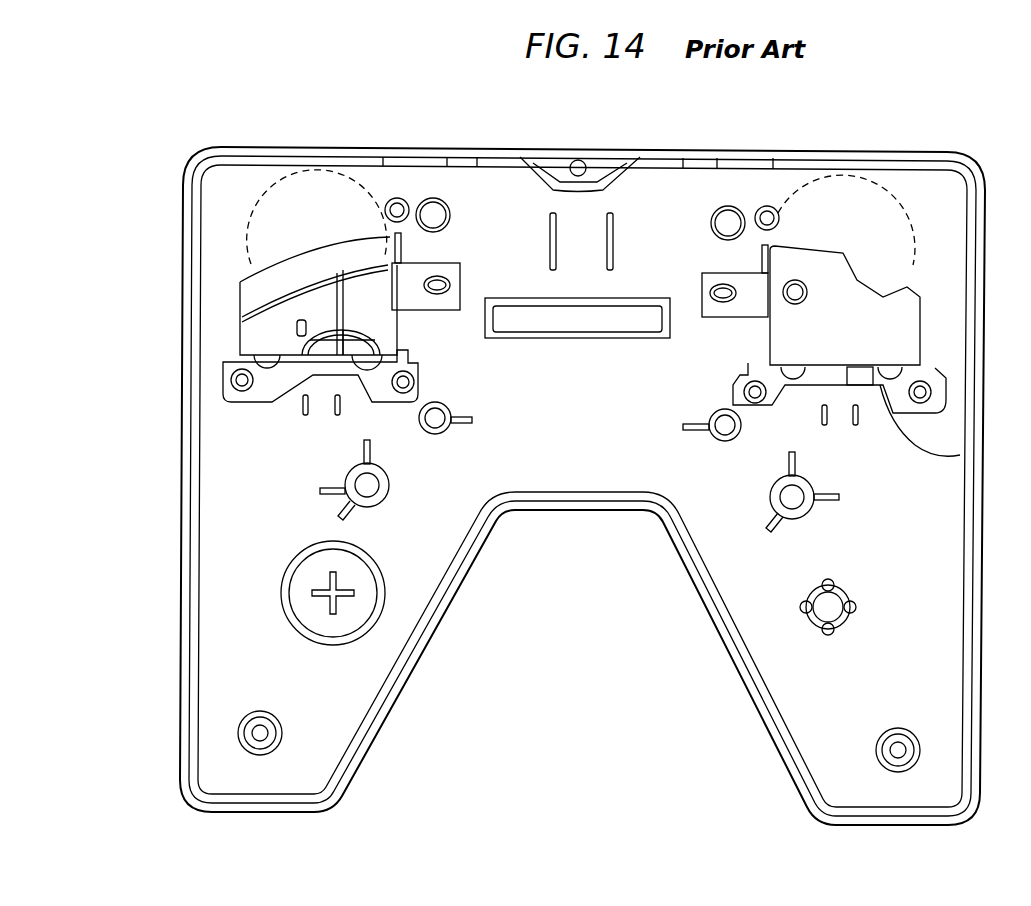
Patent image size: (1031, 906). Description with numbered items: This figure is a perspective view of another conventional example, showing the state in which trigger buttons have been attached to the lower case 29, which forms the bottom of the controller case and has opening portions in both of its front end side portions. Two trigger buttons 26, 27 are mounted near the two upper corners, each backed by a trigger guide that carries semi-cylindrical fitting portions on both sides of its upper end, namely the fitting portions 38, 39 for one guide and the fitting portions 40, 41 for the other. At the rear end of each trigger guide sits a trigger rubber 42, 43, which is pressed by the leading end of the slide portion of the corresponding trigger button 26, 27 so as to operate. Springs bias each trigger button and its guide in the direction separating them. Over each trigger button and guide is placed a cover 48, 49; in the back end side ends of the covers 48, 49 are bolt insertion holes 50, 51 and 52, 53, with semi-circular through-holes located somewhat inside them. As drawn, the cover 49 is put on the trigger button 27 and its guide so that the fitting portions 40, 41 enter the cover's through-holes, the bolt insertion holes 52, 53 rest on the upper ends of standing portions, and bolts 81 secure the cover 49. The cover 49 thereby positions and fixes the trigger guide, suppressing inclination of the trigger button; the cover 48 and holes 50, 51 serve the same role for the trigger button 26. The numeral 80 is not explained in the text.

The trigger button 26 is at (297, 180).
The trigger button 27 is at (826, 182).
The lower case 29 is at (975, 578).
The semi-cylindrical fitting portion 38 is at (240, 330).
The semi-cylindrical fitting portion 39 is at (372, 360).
The semi-cylindrical fitting portion 40 is at (773, 413).
The semi-cylindrical fitting portion 41 is at (890, 372).
The trigger rubber 42 is at (232, 406).
The trigger rubber 43 is at (955, 457).
The cover 48 is at (268, 272).
The cover 49 is at (910, 300).
The bolt insertion hole 50 is at (233, 385).
The bolt insertion hole 51 is at (403, 392).
The bolt insertion hole 52 is at (720, 437).
The bolt insertion hole 53 is at (923, 392).
The screw hole 80 is at (240, 378).
The bolt 81 is at (923, 398).